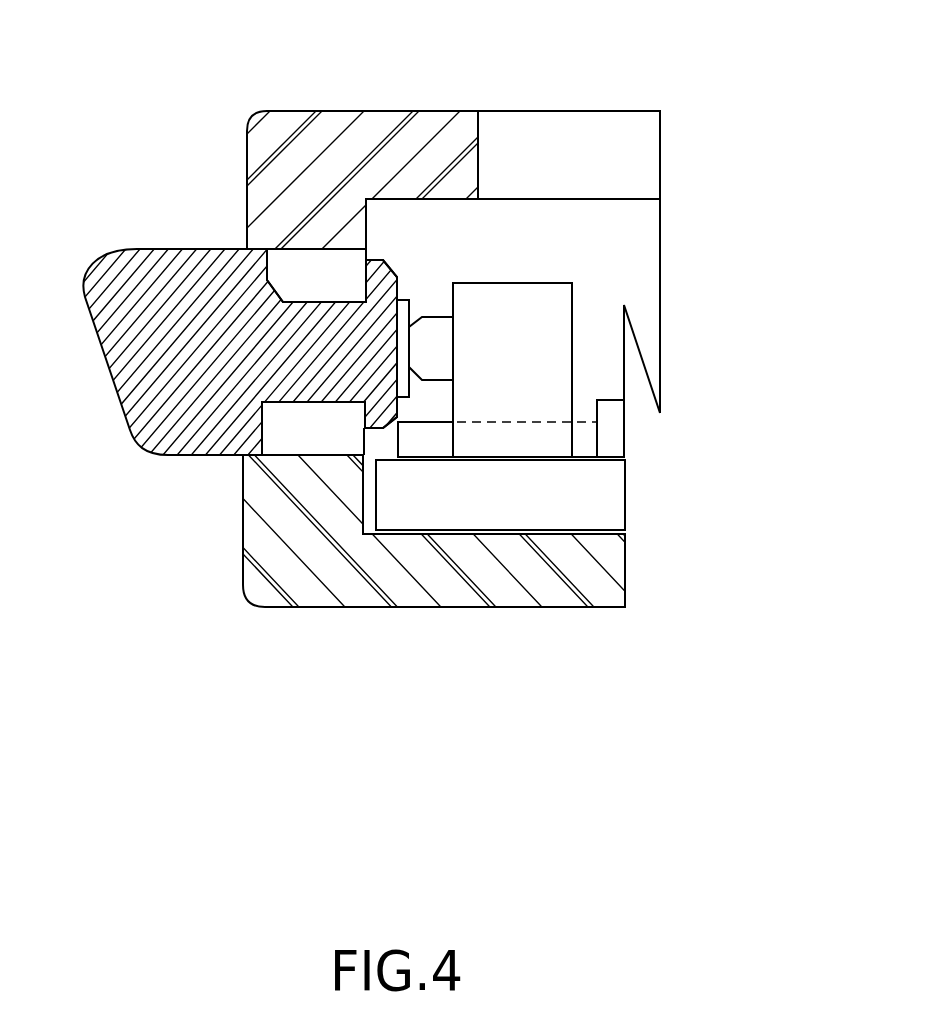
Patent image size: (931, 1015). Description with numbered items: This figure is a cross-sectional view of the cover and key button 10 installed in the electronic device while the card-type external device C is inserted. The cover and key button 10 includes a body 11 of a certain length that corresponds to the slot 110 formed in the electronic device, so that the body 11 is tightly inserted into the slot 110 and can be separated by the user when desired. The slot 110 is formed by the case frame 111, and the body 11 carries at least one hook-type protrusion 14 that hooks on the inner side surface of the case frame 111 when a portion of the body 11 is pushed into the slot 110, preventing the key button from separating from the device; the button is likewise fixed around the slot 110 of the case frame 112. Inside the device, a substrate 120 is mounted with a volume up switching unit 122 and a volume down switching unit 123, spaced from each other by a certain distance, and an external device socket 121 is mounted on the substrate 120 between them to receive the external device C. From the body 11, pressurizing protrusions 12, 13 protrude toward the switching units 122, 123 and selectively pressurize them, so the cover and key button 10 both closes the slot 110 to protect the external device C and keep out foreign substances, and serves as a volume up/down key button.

The cover and key button 10 is at (227, 376).
The body 11 is at (204, 264).
The slot 110 is at (309, 283).
The case frame 111 is at (417, 128).
The case frame 112 is at (313, 583).
The pressurizing protrusion 12 is at (551, 262).
The pressurizing protrusion 13 is at (410, 302).
The hook-type protrusion 14 is at (385, 268).
The substrate 120 is at (603, 503).
The external device socket 121 is at (607, 400).
The volume up switching unit 122 is at (599, 336).
The volume down switching unit 123 is at (565, 307).
The external device C is at (427, 447).